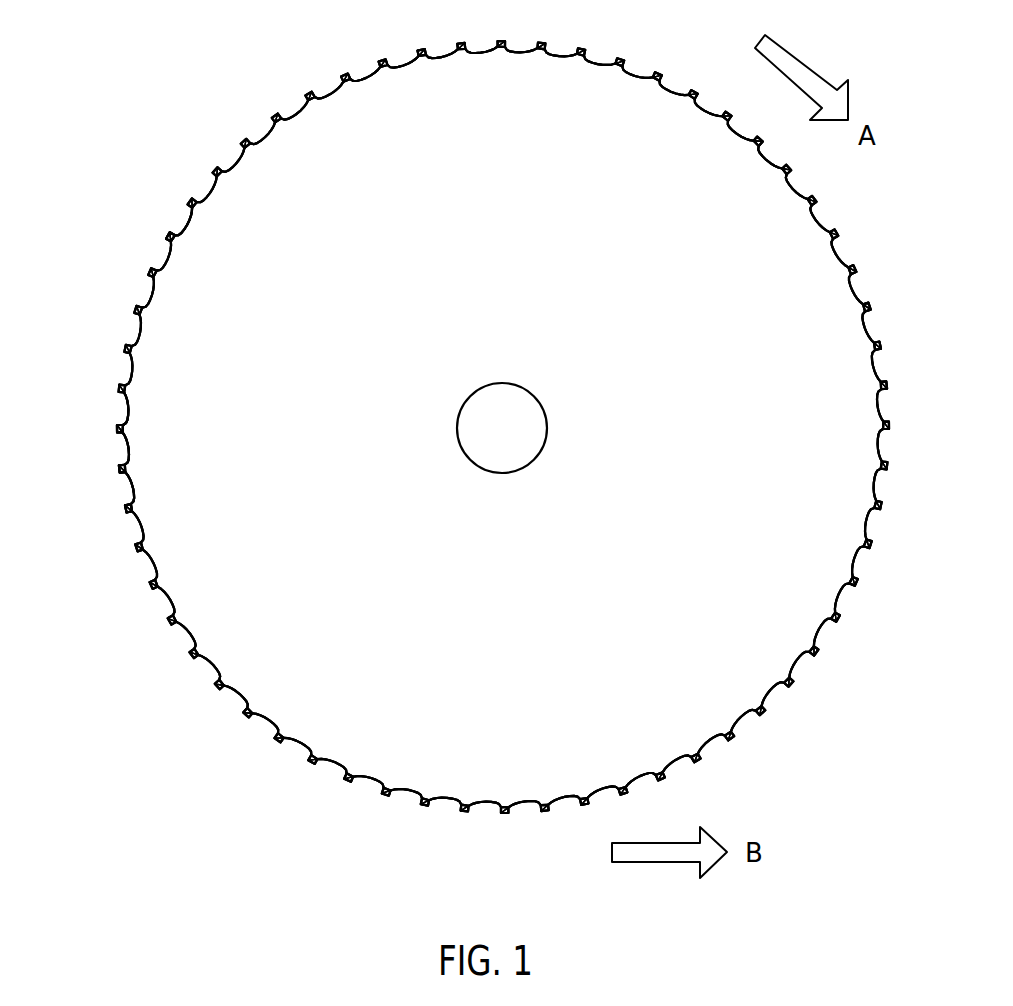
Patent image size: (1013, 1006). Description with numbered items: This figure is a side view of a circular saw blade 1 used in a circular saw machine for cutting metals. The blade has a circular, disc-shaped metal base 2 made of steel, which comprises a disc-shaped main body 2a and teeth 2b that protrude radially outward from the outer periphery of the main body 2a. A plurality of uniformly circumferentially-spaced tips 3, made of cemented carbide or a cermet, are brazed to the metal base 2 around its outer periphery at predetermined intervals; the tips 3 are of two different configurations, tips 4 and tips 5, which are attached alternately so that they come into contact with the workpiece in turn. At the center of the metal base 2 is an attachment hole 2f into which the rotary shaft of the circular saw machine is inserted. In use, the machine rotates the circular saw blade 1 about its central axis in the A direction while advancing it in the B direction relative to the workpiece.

The circular saw blade 1 is at (175, 72).
The metal base 2 is at (130, 306).
The main body 2a is at (172, 474).
The teeth 2b is at (135, 548).
The attachment hole 2f is at (463, 452).
The tips 3 is at (168, 236).
The tips 4 is at (114, 388).
The tips 5 is at (122, 345).